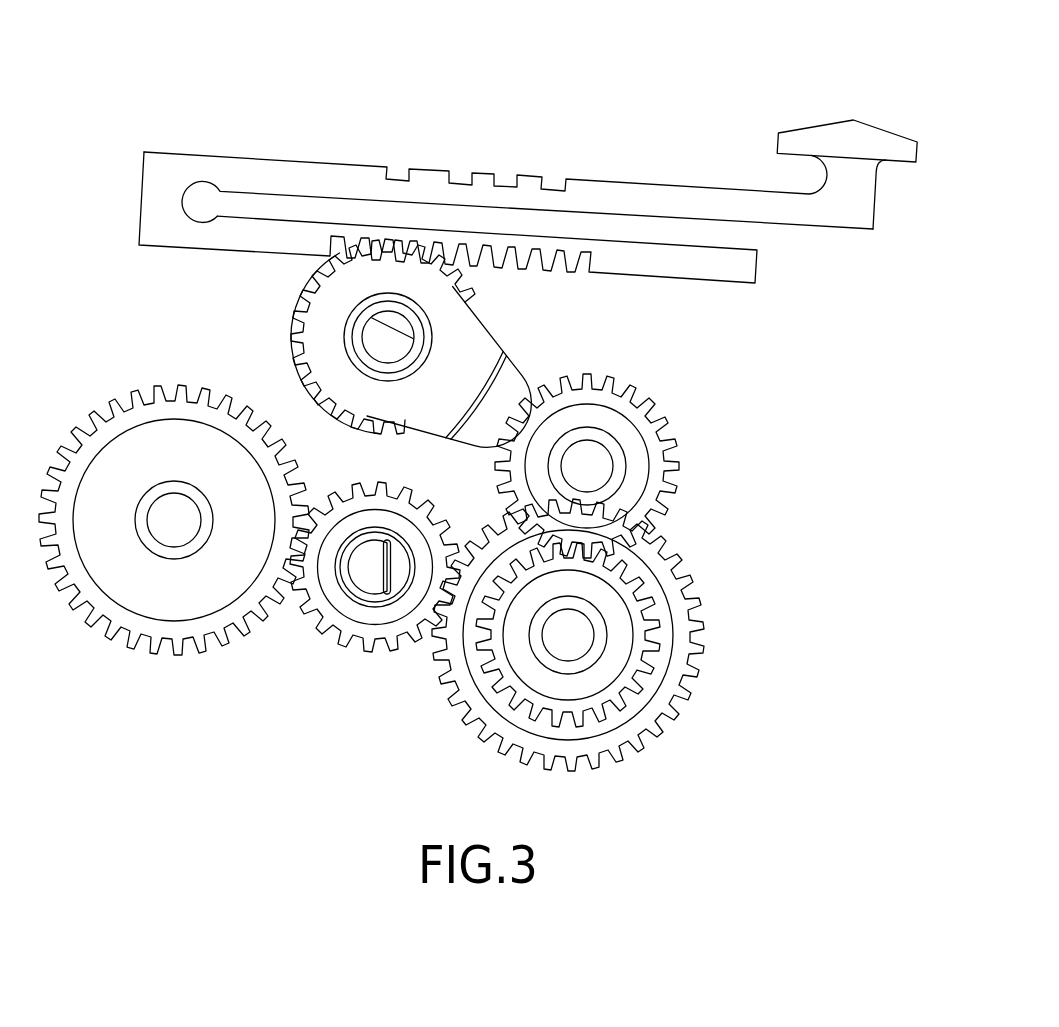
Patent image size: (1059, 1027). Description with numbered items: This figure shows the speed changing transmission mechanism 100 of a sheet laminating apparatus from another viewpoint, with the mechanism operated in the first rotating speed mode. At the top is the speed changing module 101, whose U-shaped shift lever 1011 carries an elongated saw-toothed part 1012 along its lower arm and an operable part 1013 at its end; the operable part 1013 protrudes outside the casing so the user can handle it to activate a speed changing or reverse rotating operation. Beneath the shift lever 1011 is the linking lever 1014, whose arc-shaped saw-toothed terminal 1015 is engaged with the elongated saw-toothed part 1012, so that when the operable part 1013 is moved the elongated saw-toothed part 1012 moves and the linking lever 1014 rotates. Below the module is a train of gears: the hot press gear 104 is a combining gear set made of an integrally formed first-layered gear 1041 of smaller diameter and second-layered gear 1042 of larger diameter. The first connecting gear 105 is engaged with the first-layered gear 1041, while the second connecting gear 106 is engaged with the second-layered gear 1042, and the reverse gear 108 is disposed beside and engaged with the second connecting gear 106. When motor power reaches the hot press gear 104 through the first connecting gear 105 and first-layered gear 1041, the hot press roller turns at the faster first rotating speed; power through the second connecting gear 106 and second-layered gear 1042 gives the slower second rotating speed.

The speed changing transmission mechanism 100 is at (702, 41).
The speed changing module 101 is at (277, 180).
The U-shaped shift lever 1011 is at (677, 197).
The elongated saw-toothed part 1012 is at (575, 268).
The operable part 1013 is at (818, 137).
The linking lever 1014 is at (507, 382).
The arc-shaped saw-toothed terminal 1015 is at (323, 310).
The hot press gear 104 is at (487, 682).
The first-layered gear 1041 is at (613, 657).
The second-layered gear 1042 is at (678, 610).
The first connecting gear 105 is at (650, 442).
The second connecting gear 106 is at (347, 627).
The reverse gear 108 is at (137, 627).